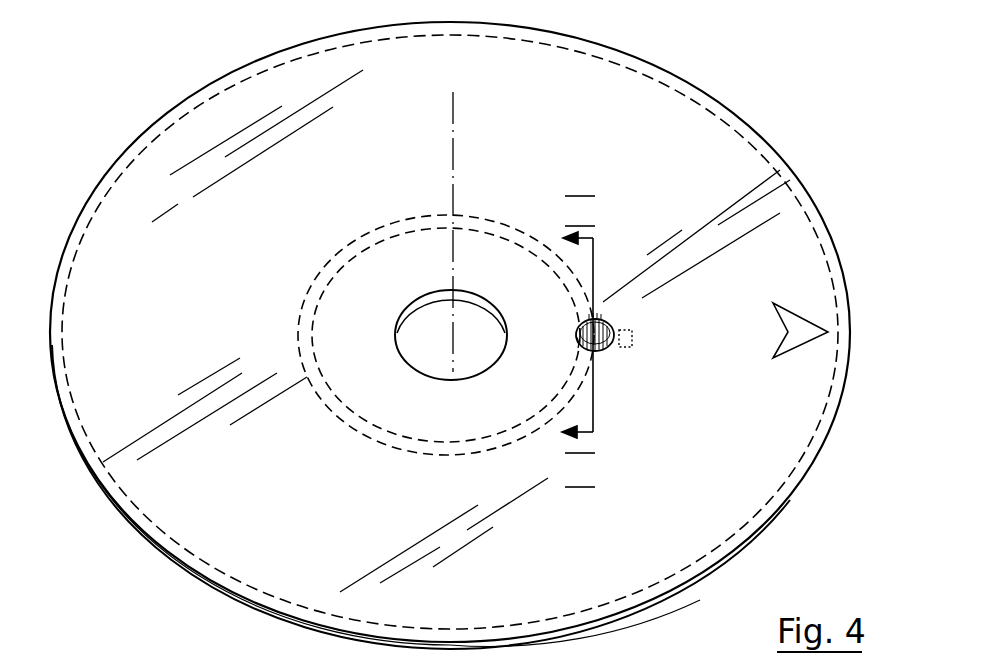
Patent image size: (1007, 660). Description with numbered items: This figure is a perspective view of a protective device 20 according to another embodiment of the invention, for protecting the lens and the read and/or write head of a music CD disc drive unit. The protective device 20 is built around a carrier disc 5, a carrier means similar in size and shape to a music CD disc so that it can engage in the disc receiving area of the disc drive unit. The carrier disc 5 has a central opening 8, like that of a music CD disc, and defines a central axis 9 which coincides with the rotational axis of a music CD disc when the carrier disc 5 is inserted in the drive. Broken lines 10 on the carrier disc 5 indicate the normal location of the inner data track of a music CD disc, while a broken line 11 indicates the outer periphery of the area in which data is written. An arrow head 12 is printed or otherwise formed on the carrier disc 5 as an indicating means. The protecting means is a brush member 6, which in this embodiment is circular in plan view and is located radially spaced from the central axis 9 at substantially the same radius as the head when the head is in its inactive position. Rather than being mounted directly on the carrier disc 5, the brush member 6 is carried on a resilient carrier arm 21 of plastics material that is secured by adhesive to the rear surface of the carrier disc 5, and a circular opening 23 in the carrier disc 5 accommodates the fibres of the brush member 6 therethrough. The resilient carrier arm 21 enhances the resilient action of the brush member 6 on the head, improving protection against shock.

The carrier disc 5 is at (808, 248).
The brush member 6 is at (613, 322).
The central opening 8 is at (430, 368).
The central axis 9 is at (455, 132).
The broken lines 10 is at (470, 218).
The broken line 11 is at (210, 88).
The arrow head 12 is at (810, 340).
The protective device 20 is at (470, 334).
The resilient carrier arm 21 is at (628, 348).
The circular opening 23 is at (578, 342).